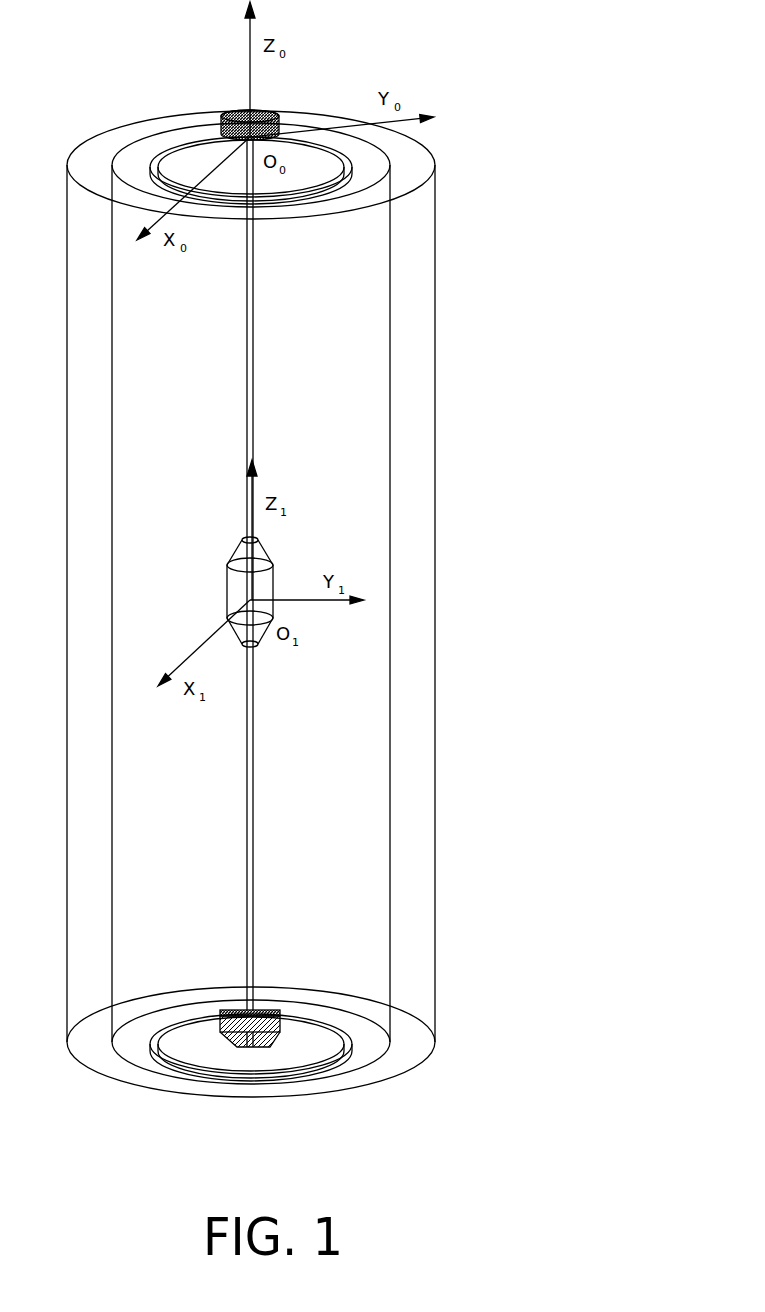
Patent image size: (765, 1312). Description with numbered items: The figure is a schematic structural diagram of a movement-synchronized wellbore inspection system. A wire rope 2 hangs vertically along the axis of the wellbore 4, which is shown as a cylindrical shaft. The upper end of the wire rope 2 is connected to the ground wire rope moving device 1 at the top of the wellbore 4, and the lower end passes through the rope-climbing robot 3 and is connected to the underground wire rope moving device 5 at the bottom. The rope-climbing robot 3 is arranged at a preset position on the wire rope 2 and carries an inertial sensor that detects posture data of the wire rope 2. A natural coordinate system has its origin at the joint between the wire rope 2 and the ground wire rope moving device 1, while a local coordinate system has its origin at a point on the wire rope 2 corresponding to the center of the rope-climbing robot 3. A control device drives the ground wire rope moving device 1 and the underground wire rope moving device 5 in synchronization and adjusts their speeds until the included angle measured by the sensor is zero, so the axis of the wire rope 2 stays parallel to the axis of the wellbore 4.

The ground wire rope moving device 1 is at (351, 168).
The wire rope 2 is at (399, 573).
The rope-climbing robot 3 is at (389, 551).
The wellbore 4 is at (309, 604).
The underground wire rope moving device 5 is at (350, 986).